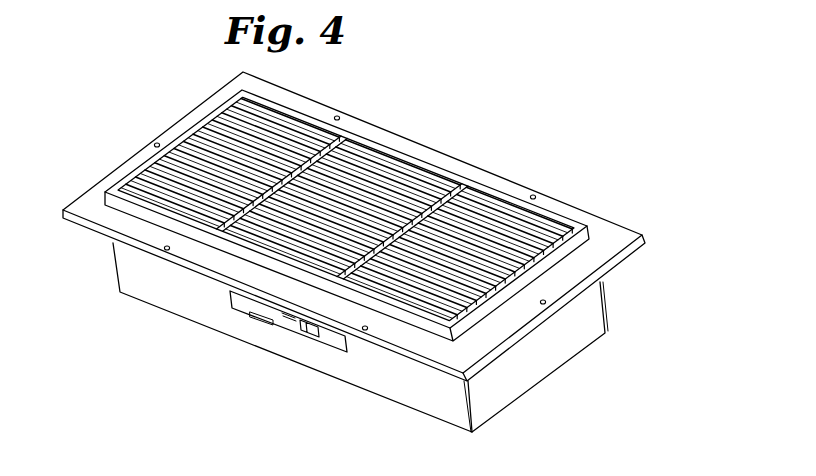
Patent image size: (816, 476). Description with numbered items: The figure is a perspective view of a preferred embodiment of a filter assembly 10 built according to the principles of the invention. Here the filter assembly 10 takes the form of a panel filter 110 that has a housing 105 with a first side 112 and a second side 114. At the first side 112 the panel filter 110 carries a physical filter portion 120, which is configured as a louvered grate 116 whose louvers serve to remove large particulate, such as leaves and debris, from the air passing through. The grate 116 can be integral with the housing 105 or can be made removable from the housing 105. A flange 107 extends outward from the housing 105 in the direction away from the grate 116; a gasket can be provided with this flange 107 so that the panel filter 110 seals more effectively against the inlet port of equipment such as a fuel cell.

The filter assembly 10 is at (448, 114).
The housing 105 is at (334, 377).
The flange 107 is at (632, 258).
The panel filter 110 is at (519, 140).
The first side 112 is at (155, 160).
The second side 114 is at (550, 370).
The louvered grate 116 is at (321, 119).
The physical filter portion 120 is at (223, 122).